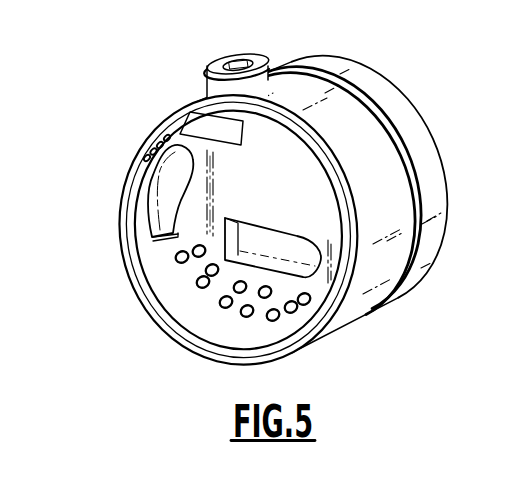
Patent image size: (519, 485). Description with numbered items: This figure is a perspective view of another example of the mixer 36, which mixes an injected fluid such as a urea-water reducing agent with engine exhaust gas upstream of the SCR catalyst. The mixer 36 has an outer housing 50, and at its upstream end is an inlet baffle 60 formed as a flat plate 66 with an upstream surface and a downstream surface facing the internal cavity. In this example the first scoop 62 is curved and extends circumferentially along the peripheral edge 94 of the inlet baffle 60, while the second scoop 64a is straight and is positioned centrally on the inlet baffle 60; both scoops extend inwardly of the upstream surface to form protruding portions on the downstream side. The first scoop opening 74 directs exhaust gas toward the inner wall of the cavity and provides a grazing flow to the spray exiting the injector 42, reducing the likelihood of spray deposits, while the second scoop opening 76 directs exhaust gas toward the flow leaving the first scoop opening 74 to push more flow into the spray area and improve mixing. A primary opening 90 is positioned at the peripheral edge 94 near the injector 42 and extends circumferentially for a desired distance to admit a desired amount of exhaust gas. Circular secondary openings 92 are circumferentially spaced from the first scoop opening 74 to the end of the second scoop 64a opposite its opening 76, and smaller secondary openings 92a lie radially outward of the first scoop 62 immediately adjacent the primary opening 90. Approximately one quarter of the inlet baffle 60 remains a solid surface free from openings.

The mixer 36 is at (437, 34).
The injector 42 is at (220, 58).
The outer housing 50 is at (384, 304).
The inlet baffle 60 is at (220, 328).
The first scoop 62 is at (147, 234).
The second scoop 64a is at (271, 266).
The flat plate 66 is at (269, 200).
The first scoop opening 74 is at (176, 238).
The second scoop opening 76 is at (236, 241).
The primary opening 90 is at (196, 123).
The secondary openings 92 is at (281, 313).
The smaller secondary openings 92a is at (144, 149).
The peripheral edge 94 is at (126, 221).